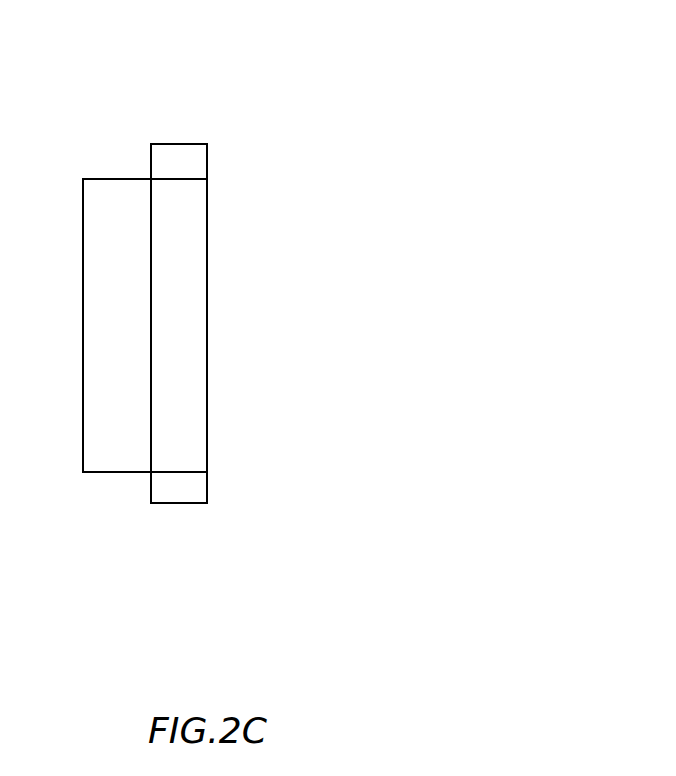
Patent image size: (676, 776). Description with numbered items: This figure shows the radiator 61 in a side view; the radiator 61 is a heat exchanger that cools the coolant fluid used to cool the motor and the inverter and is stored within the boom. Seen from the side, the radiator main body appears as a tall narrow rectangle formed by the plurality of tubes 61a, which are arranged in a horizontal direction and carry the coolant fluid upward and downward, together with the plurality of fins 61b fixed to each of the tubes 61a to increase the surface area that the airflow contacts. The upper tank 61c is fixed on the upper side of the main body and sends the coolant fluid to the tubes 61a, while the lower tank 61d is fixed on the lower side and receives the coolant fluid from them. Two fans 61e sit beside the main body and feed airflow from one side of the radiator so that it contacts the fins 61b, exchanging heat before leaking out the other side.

The radiator 61 is at (328, 103).
The tubes 61a is at (263, 323).
The fins 61b is at (185, 352).
The upper tank 61c is at (175, 144).
The lower tank 61d is at (182, 507).
The fans 61e is at (107, 178).